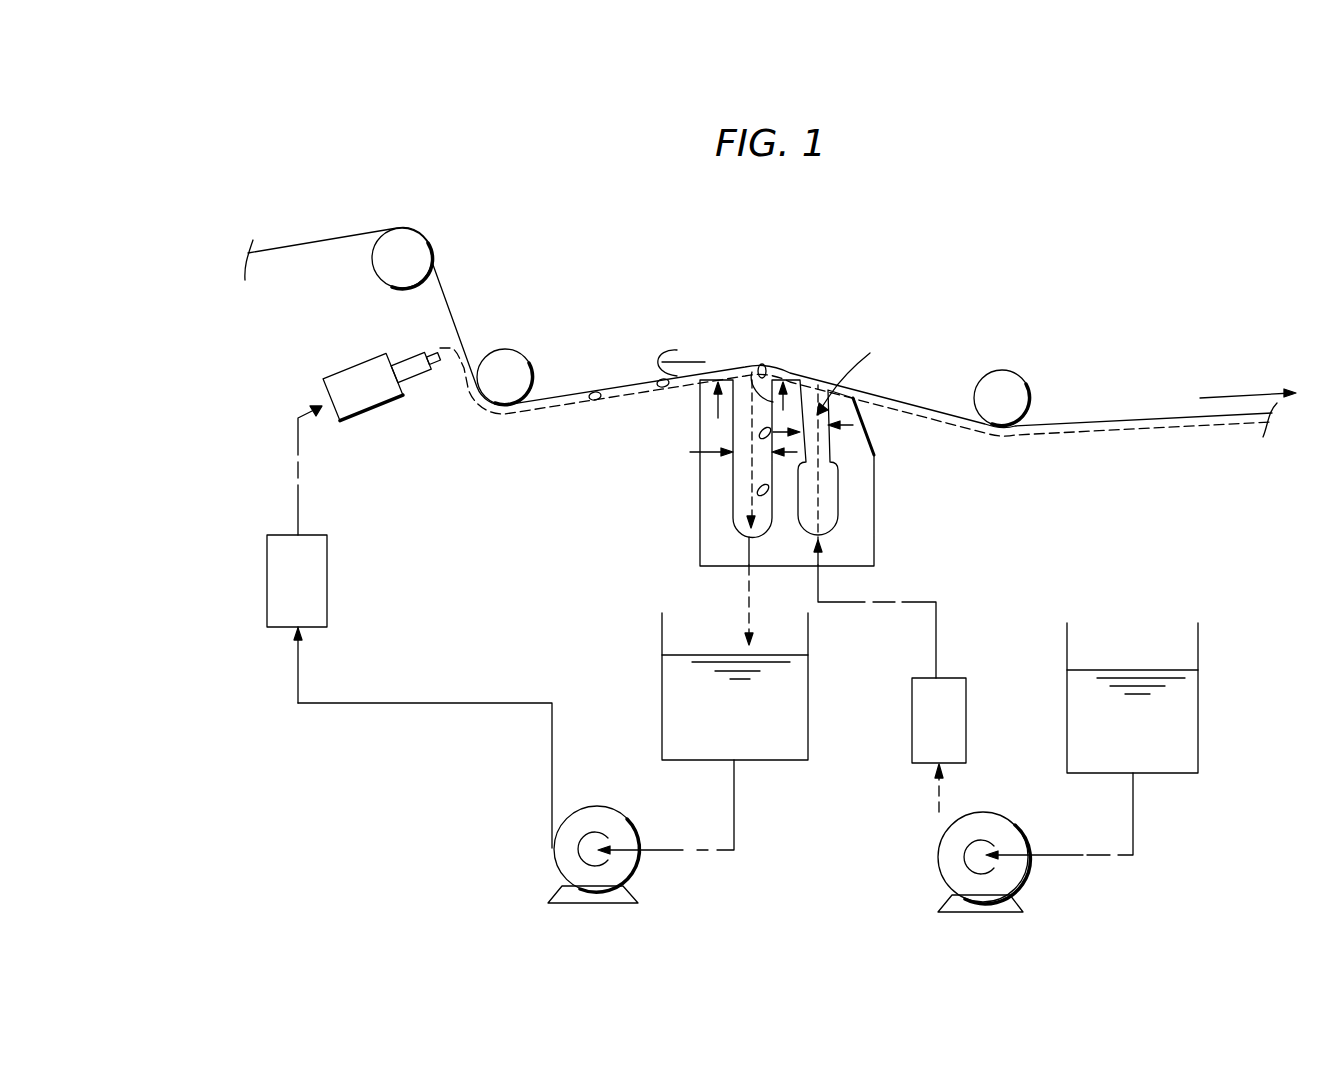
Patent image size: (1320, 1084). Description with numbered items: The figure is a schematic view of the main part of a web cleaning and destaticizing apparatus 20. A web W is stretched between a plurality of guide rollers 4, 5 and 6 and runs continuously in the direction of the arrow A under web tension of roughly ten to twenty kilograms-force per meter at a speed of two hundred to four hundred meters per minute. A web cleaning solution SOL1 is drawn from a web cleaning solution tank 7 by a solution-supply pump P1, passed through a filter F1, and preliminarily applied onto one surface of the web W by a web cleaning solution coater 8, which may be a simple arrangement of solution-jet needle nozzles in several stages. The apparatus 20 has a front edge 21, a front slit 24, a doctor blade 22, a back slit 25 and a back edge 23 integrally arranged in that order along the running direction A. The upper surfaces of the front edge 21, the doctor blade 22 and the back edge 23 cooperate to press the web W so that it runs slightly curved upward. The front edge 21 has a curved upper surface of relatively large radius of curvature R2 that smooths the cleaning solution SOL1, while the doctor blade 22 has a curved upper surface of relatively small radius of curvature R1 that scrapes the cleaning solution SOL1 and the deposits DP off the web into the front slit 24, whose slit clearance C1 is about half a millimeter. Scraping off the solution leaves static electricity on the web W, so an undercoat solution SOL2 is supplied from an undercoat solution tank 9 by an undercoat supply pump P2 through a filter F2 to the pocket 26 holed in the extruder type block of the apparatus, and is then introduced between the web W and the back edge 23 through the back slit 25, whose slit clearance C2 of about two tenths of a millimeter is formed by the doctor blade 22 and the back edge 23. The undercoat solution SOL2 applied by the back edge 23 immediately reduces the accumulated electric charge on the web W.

The guide roller 4 is at (378, 279).
The guide roller 5 is at (530, 363).
The guide roller 6 is at (1023, 387).
The web cleaning solution tank 7 is at (662, 655).
The web cleaning solution coater 8 is at (350, 362).
The undercoat solution tank 9 is at (1198, 645).
The web cleaning and destaticizing apparatus 20 is at (619, 278).
The front edge 21 is at (697, 413).
The doctor blade 22 is at (800, 382).
The back edge 23 is at (890, 398).
The front slit 24 is at (733, 513).
The back slit 25 is at (830, 453).
The second slot chamber 26 is at (840, 512).
The radius of curvature R1 is at (760, 372).
The radius of curvature R2 is at (690, 408).
The slit clearance C1 is at (745, 447).
The slit clearance C2 is at (857, 377).
The deposits DP is at (760, 490).
The web W is at (1117, 418).
The running direction A is at (1230, 398).
The web cleaning solution SOL1 is at (483, 405).
The undercoat solution SOL2 is at (987, 433).
The filter F1 is at (267, 595).
The filter F2 is at (912, 735).
The solution-supply pump P1 is at (556, 868).
The undercoat supply pump P2 is at (940, 875).